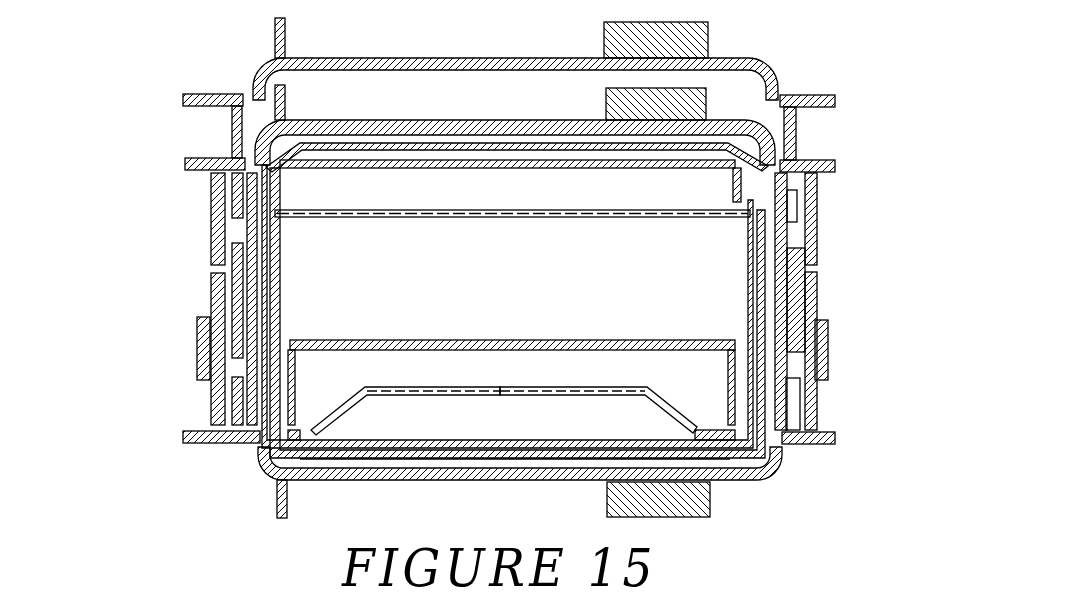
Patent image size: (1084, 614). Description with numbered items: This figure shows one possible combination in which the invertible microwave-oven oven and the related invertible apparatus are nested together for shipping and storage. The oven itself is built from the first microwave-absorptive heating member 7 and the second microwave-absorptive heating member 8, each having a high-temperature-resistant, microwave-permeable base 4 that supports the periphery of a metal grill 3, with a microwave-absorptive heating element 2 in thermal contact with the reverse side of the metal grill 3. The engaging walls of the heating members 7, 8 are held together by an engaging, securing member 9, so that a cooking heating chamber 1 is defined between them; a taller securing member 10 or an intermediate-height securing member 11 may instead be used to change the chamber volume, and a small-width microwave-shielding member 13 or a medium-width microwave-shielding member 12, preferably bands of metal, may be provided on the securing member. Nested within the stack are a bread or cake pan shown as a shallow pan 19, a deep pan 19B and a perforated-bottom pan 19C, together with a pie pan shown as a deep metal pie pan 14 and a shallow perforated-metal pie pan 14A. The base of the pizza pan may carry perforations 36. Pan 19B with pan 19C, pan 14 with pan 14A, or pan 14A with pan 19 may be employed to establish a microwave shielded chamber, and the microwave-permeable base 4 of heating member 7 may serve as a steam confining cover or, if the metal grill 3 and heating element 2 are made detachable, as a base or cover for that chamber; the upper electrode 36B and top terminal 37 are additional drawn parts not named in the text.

The cooking heating chamber 1 is at (775, 173).
The microwave-absorptive heating element 2 is at (272, 480).
The metal grill 3 is at (260, 458).
The microwave-permeable base 4 is at (262, 75).
The first microwave-absorptive heating member 7 is at (772, 118).
The second microwave-absorptive heating member 8 is at (787, 470).
The engaging, securing member 9 is at (810, 203).
The engaging, securing member 10 is at (810, 307).
The securing member 11 is at (778, 216).
The medium-width microwave-shielding member 12 is at (790, 263).
The small-width microwave-shielding member 13 is at (817, 332).
The deep metal pie pan 14 is at (678, 402).
The shallow perforated-metal pie pan 14A is at (695, 425).
The shallow pan 19 is at (730, 369).
The deep pan 19B is at (210, 182).
The perforated-bottom pan 19C is at (752, 183).
The perforations 36 is at (357, 392).
The upper electrode 36B is at (355, 213).
The top terminal 37 is at (793, 68).